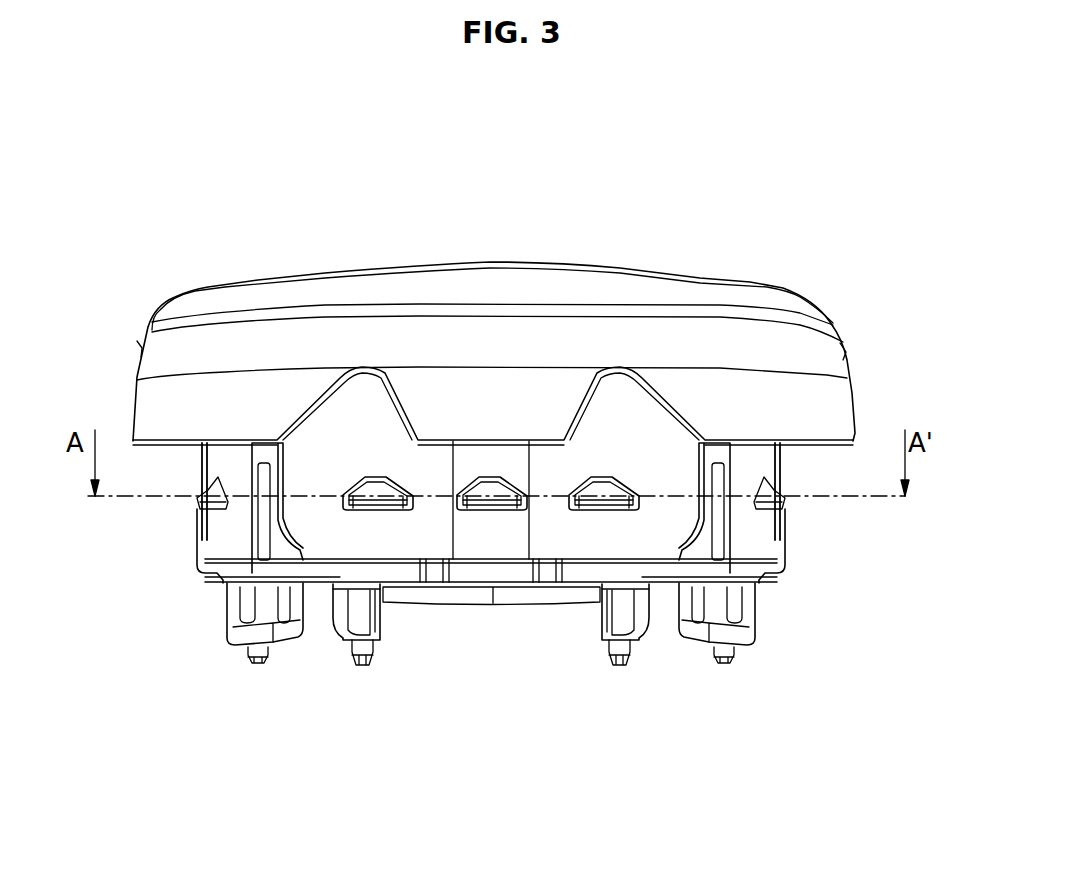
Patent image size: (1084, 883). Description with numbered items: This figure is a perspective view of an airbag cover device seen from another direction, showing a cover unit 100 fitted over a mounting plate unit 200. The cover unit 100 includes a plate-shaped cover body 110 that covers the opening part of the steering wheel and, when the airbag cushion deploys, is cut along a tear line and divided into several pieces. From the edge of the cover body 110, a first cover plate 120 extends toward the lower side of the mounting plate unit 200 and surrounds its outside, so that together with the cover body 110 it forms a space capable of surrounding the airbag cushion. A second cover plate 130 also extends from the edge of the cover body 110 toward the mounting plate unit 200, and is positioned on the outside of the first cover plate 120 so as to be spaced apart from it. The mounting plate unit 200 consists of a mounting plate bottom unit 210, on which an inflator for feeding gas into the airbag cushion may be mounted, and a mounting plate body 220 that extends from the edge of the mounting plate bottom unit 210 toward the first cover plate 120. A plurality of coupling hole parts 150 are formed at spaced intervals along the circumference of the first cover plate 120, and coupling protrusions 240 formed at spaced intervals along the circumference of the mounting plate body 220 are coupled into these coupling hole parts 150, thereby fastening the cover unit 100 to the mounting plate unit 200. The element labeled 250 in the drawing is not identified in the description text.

The cover unit 100 is at (690, 200).
The cover body 110 is at (720, 291).
The first cover plate 120 is at (758, 533).
The second cover plate 130 is at (810, 408).
The coupling hole part 150 is at (510, 513).
The mounting plate unit 200 is at (587, 680).
The mounting plate bottom unit 210 is at (397, 585).
The mounting plate body 220 is at (467, 575).
The coupling protrusion 240 is at (620, 560).
The coupling bracket 250 is at (247, 553).